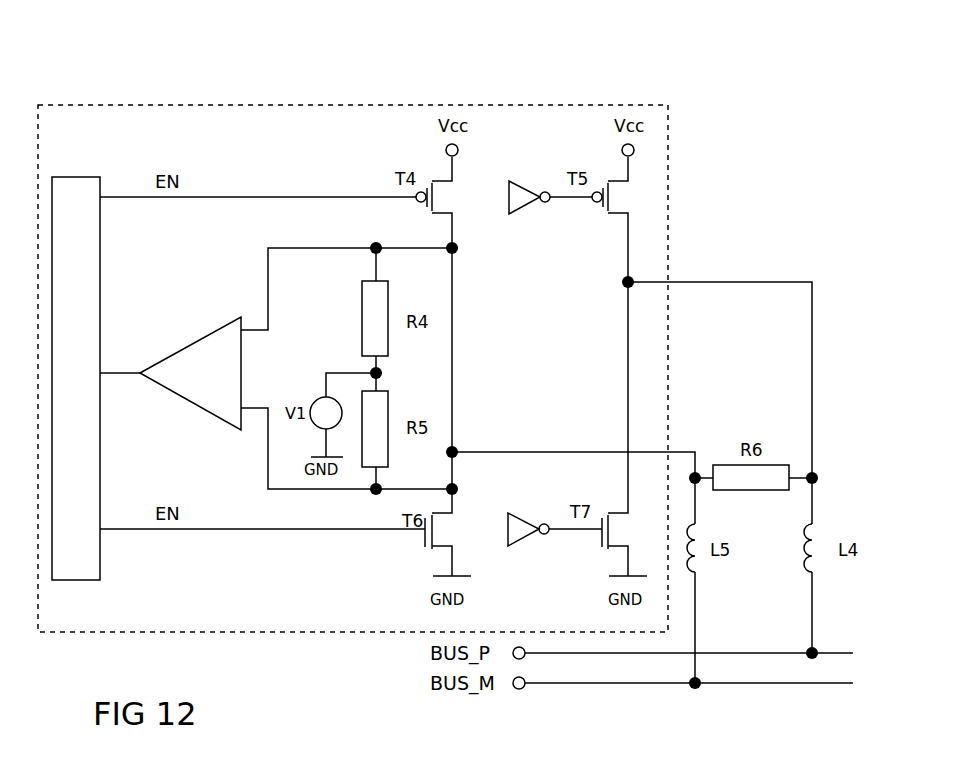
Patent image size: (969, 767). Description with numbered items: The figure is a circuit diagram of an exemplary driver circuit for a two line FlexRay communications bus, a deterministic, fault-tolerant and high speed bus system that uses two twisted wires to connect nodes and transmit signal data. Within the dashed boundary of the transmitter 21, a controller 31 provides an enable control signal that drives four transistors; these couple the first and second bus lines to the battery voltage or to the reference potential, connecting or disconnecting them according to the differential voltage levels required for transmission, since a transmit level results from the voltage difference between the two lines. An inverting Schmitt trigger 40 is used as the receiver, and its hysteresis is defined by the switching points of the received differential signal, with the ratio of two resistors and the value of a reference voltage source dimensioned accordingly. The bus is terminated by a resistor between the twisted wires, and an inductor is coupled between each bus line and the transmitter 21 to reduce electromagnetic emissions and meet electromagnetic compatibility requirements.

The transmitter 21 is at (177, 105).
The controller 31 is at (70, 177).
The inverting Schmitt trigger 40 is at (202, 338).